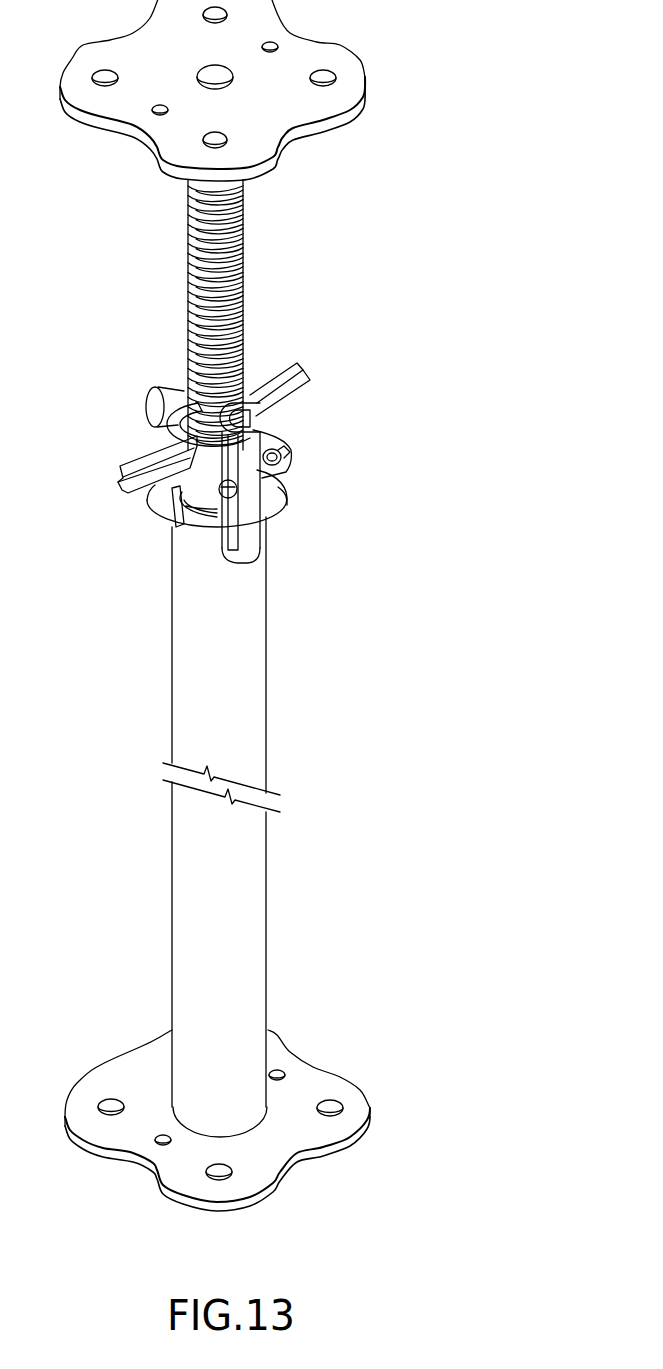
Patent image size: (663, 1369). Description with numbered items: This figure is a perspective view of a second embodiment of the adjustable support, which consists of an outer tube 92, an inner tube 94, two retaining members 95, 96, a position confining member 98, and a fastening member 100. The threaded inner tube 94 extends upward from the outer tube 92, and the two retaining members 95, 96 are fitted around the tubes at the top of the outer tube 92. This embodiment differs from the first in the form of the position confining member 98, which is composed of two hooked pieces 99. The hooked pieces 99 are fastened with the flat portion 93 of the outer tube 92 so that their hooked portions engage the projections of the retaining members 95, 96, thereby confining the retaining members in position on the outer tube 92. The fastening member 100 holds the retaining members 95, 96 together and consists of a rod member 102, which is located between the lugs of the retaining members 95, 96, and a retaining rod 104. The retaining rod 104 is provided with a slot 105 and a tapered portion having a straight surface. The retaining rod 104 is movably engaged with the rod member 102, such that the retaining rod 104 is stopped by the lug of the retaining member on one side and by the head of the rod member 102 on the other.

The outer tube 92 is at (268, 717).
The flat portion 93 is at (268, 507).
The inner tube 94 is at (252, 303).
The retaining member 95 is at (272, 426).
The retaining member 96 is at (170, 523).
The position confining member 98 is at (152, 511).
The hooked piece 99 is at (153, 500).
The fastening member 100 is at (248, 561).
The rod member 102 is at (238, 492).
The retaining rod 104 is at (252, 542).
The slot 105 is at (222, 553).